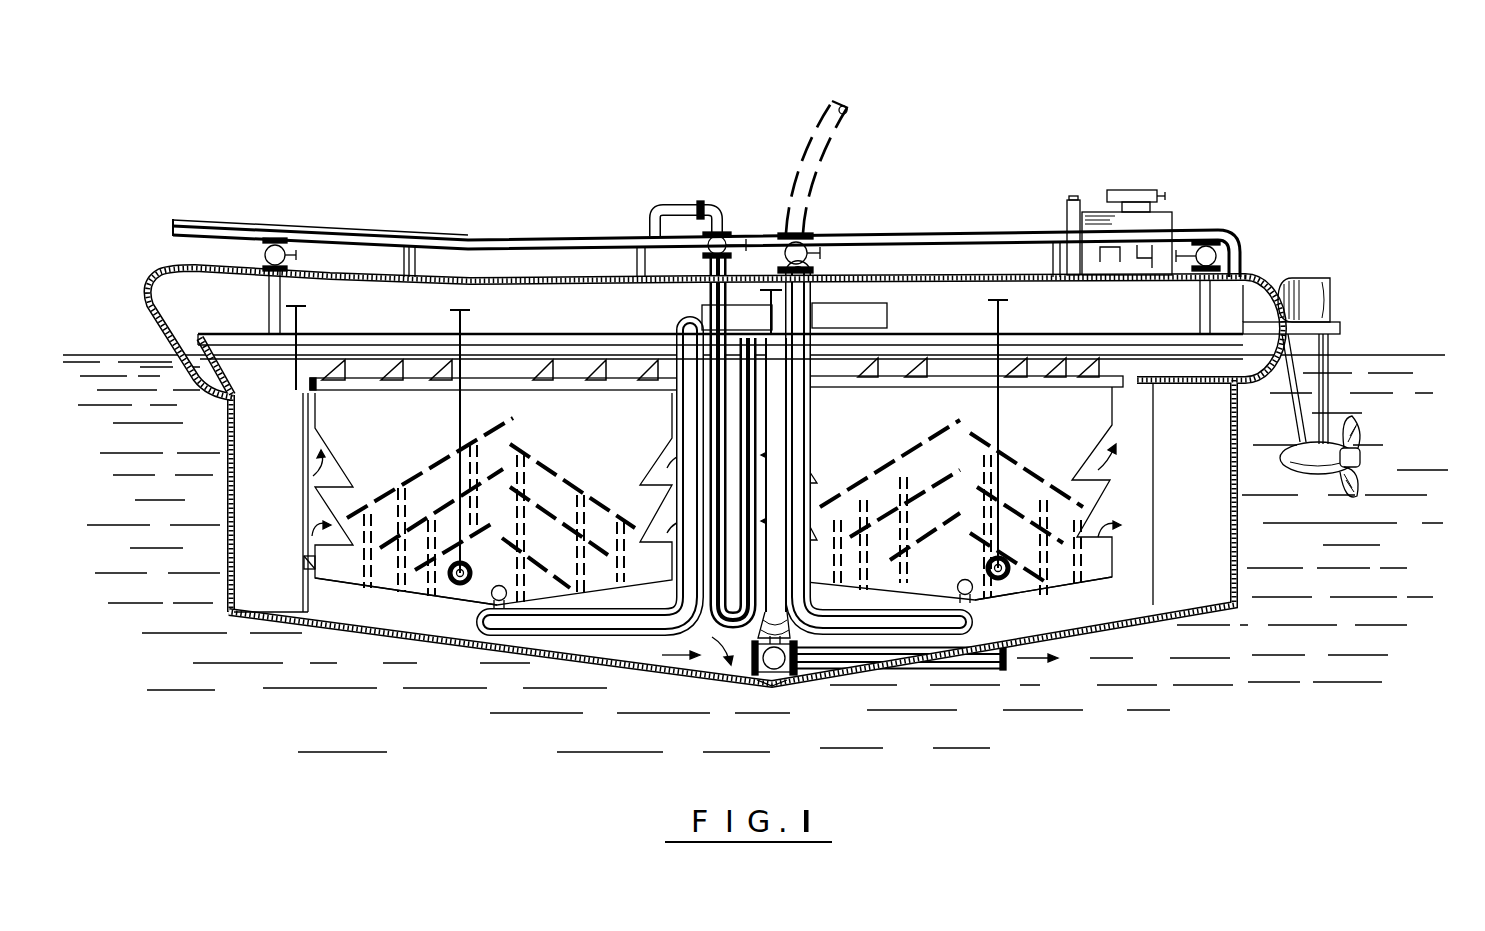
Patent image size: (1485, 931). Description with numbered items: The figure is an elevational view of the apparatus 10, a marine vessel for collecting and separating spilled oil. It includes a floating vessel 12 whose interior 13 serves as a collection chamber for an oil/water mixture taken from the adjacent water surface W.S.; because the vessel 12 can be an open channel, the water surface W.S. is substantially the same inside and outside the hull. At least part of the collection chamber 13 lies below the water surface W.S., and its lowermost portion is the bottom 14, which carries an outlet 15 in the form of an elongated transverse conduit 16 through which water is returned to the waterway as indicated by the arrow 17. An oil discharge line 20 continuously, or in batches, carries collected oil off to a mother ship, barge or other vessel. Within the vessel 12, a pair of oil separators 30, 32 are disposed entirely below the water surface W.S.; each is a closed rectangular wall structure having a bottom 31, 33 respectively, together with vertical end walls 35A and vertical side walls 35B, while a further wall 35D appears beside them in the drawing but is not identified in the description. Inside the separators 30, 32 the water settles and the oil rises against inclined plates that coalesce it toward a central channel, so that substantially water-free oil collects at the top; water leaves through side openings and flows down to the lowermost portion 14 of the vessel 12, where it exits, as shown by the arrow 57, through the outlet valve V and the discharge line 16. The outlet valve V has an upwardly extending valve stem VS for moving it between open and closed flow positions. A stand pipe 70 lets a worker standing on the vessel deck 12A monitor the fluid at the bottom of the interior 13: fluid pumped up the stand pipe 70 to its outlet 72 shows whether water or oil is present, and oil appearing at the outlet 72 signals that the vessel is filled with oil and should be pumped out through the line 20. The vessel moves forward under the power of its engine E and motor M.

The apparatus 10 is at (563, 122).
The floating vessel 12 is at (232, 614).
The vessel deck 12A is at (430, 270).
The interior 13 is at (250, 475).
The bottom 14 is at (765, 677).
The outlet 15 is at (955, 672).
The elongated transverse conduit 16 is at (836, 660).
The arrow 17 is at (1030, 666).
The oil discharge line 20 is at (815, 183).
The oil separator 30 is at (382, 590).
The bottom 31 is at (430, 592).
The oil separator 32 is at (1068, 587).
The bottom 33 is at (1043, 588).
The end walls 35A is at (621, 435).
The side walls 35B is at (312, 410).
The starboard side compartment 35D is at (1112, 402).
The arrow 57 is at (712, 637).
The stand pipe 70 is at (702, 322).
The outlet 72 is at (653, 243).
The engine E is at (1137, 190).
The motor M is at (1296, 276).
The outlet valve V is at (777, 680).
The valve stem VS is at (771, 318).
The water surface W.S. is at (130, 352).